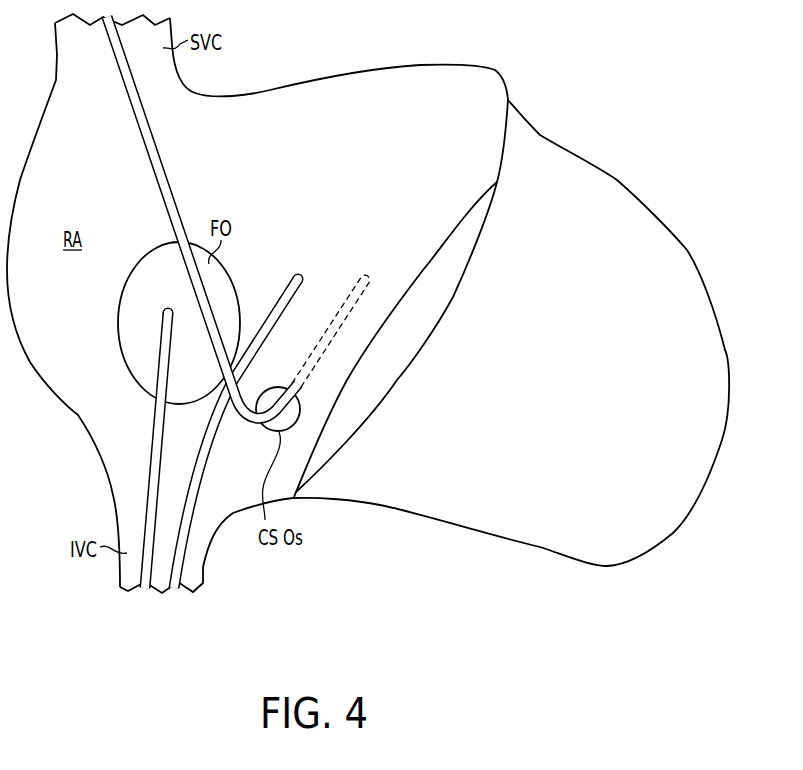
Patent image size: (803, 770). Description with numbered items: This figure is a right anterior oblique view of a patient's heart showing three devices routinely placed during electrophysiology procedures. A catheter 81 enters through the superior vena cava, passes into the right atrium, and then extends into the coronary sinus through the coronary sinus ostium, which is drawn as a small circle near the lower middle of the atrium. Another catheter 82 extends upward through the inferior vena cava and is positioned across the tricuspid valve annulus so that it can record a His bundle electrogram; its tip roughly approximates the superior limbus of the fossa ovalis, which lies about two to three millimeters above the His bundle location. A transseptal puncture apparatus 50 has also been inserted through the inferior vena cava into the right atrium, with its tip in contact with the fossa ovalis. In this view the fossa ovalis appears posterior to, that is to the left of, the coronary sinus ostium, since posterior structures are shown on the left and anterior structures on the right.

The transseptal puncture apparatus 50 is at (157, 409).
The catheter 81 is at (170, 182).
The catheter 82 is at (287, 284).